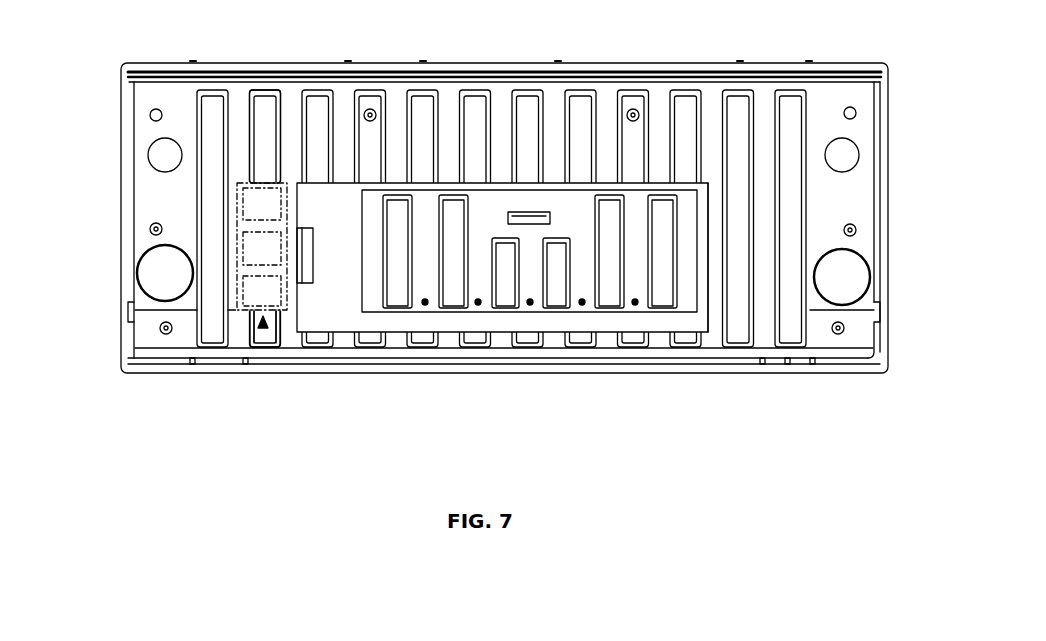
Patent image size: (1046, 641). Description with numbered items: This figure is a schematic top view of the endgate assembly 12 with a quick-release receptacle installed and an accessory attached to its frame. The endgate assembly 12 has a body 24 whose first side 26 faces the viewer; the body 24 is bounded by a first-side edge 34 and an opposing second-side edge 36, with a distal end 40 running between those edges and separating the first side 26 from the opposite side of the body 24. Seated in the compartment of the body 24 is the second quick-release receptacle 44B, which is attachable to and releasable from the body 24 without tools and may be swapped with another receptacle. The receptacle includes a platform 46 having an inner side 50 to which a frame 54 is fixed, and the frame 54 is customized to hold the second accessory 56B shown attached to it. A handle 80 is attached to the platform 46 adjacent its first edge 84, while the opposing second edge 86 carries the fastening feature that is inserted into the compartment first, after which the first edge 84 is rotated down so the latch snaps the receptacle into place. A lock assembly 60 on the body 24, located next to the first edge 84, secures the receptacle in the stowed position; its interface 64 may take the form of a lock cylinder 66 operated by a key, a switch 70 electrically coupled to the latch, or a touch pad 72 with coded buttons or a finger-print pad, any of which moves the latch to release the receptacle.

The endgate assembly 12 is at (897, 235).
The body 24 is at (858, 373).
The first side 26 is at (867, 102).
The first-side edge 34 is at (120, 262).
The second-side edge 36 is at (888, 158).
The distal end 40 is at (548, 63).
The second quick-release receptacle 44B is at (435, 392).
The platform 46 is at (323, 330).
The inner side 50 is at (323, 330).
The frame 54 is at (607, 312).
The second accessory 56B is at (687, 298).
The lock assembly 60 is at (262, 328).
The interface 64 is at (257, 180).
The lock cylinder 66 is at (273, 215).
The switch 70 is at (273, 259).
The touch pad 72 is at (273, 302).
The handle 80 is at (317, 257).
The first edge 84 is at (283, 183).
The second edge 86 is at (708, 238).